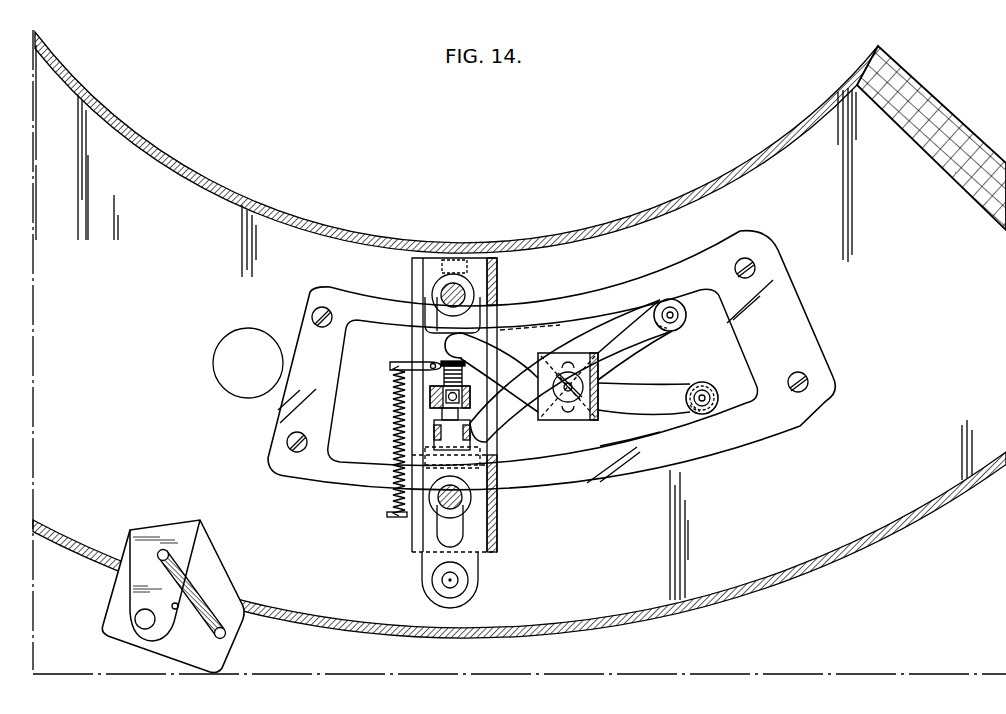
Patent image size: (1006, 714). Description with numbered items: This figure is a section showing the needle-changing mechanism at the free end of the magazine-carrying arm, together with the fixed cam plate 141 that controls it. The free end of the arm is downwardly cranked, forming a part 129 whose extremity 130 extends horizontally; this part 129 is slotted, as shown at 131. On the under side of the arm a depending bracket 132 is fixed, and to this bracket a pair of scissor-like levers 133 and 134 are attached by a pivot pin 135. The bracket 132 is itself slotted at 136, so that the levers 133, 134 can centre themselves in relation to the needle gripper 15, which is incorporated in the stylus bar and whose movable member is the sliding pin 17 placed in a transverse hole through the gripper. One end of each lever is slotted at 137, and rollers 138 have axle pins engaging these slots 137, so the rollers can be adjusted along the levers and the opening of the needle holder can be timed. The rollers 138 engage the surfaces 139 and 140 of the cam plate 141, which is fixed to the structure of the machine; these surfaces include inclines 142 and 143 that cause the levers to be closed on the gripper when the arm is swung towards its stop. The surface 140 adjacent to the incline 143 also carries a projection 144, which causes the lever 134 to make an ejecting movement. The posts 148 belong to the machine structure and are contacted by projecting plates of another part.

The needle gripper 15 is at (430, 402).
The sliding pin 17 is at (420, 381).
The downwardly cranked part of the arm 129 is at (498, 270).
The extremity of the arm 130 is at (417, 540).
The slot 131 is at (513, 407).
The depending bracket 132 is at (603, 382).
The scissor-like lever 133 is at (640, 332).
The scissor-like lever 134 is at (668, 407).
The pivot pin 135 is at (568, 421).
The slot in bracket 136 is at (565, 352).
The slot in lever 137 is at (662, 305).
The roller 138 is at (697, 385).
The cam surface 139 is at (605, 318).
The cam surface 140 is at (626, 441).
The cam plate 141 is at (275, 428).
The incline 142 is at (480, 330).
The incline 143 is at (400, 440).
The projection 144 is at (500, 478).
The post 148 is at (440, 290).